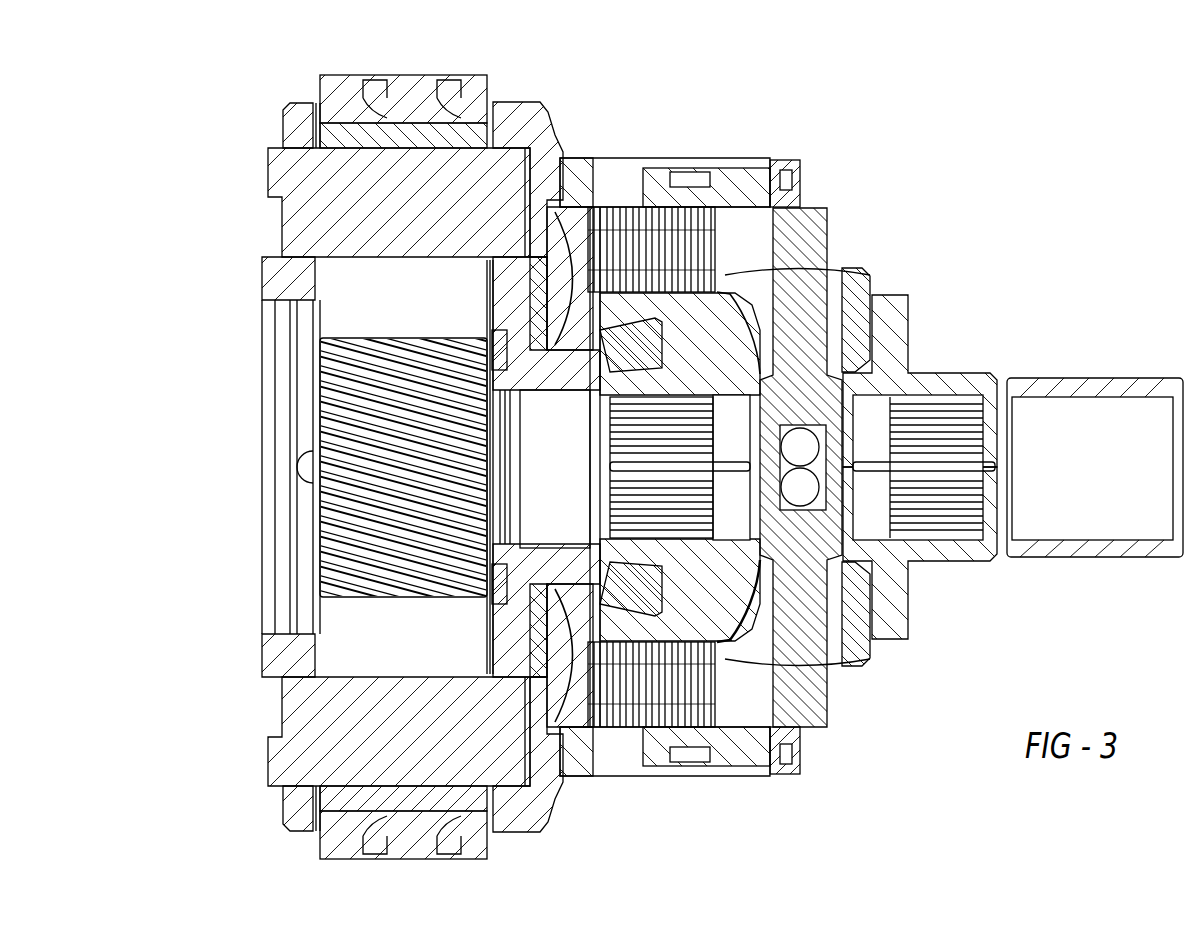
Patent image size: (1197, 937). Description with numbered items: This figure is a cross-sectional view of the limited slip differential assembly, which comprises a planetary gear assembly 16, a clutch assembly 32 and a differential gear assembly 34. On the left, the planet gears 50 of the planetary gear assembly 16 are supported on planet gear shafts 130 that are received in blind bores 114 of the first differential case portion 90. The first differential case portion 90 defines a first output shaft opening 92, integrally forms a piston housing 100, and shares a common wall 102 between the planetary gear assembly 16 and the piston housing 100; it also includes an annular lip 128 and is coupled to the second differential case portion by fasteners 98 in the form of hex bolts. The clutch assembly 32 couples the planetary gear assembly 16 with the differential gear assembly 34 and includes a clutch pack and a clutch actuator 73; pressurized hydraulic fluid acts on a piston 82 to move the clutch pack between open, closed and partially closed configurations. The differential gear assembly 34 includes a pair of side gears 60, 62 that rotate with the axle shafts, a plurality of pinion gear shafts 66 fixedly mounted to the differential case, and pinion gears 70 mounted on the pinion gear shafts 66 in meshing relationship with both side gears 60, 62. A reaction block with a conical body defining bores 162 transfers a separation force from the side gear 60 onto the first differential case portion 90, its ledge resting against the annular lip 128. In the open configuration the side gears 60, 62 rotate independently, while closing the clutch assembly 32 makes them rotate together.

The planetary gear assembly 16 is at (330, 55).
The clutch assembly 32 is at (742, 128).
The differential gear assembly 34 is at (862, 170).
The planet gears 50 is at (340, 105).
The side gear 60 is at (702, 337).
The side gear 62 is at (895, 318).
The pinion gear shafts 66 is at (807, 250).
The pinion gears 70 is at (852, 285).
The clutch actuator 73 is at (565, 205).
The piston 82 is at (575, 232).
The first differential case portion 90 is at (539, 125).
The first output shaft opening 92 is at (547, 515).
The fasteners 98 is at (785, 168).
The piston housing 100 is at (632, 580).
The common wall 102 is at (525, 285).
The blind bores 114 is at (507, 160).
The annular lip 128 is at (605, 283).
The planet gear shafts 130 is at (305, 175).
The bores 162 is at (714, 640).